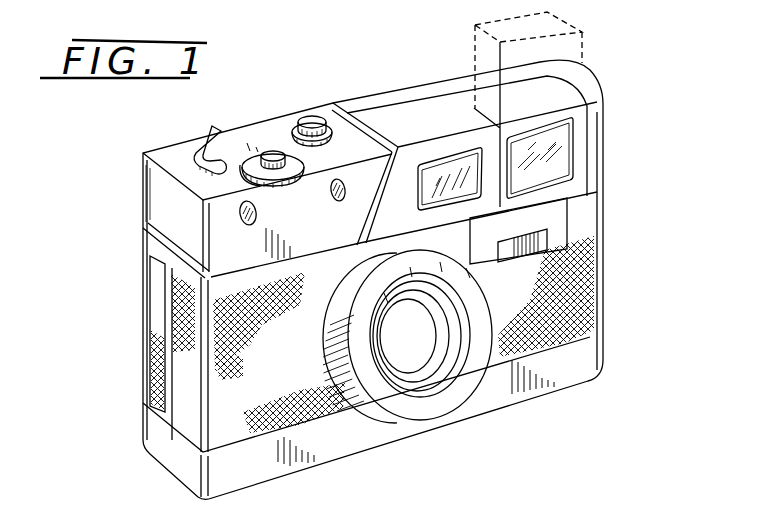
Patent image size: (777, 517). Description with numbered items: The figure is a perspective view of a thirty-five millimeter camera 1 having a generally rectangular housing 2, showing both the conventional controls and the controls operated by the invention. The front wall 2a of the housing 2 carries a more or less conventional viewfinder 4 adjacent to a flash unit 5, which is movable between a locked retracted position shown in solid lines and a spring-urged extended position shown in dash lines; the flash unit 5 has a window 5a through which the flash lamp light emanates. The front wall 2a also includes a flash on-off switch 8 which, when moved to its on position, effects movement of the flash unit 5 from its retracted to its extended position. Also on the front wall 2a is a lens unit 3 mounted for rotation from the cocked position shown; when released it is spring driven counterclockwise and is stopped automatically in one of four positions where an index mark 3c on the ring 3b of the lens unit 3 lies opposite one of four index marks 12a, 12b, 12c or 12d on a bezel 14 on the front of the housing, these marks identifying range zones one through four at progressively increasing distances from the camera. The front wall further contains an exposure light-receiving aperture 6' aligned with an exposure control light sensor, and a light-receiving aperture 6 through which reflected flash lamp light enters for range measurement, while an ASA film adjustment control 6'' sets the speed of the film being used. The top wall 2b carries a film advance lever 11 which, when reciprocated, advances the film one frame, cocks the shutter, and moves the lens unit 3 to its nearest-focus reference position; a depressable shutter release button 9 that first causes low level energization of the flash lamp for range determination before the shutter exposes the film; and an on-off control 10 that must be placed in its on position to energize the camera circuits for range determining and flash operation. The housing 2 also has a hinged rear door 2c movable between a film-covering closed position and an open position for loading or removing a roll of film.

The camera 1 is at (106, 218).
The housing 2 is at (133, 380).
The front wall 2a is at (303, 405).
The top wall 2b is at (287, 134).
The rear door 2c is at (147, 315).
The lens unit 3 is at (426, 352).
The ring 3b is at (463, 358).
The index mark 3c is at (472, 300).
The viewfinder 4 is at (448, 158).
The flash unit 5 is at (592, 56).
The window 5a is at (548, 153).
The light-receiving aperture 6 is at (242, 228).
The exposure light-receiving aperture 6' is at (353, 187).
The ASA film adjustment control 6'' is at (312, 111).
The flash on-off switch 8 is at (549, 233).
The shutter release button 9 is at (246, 163).
The on-off control 10 is at (280, 186).
The film advance lever 11 is at (200, 136).
The index mark 12a is at (464, 266).
The index mark 12b is at (427, 276).
The index mark 12c is at (403, 286).
The index mark 12d is at (385, 307).
The bezel 14 is at (492, 289).